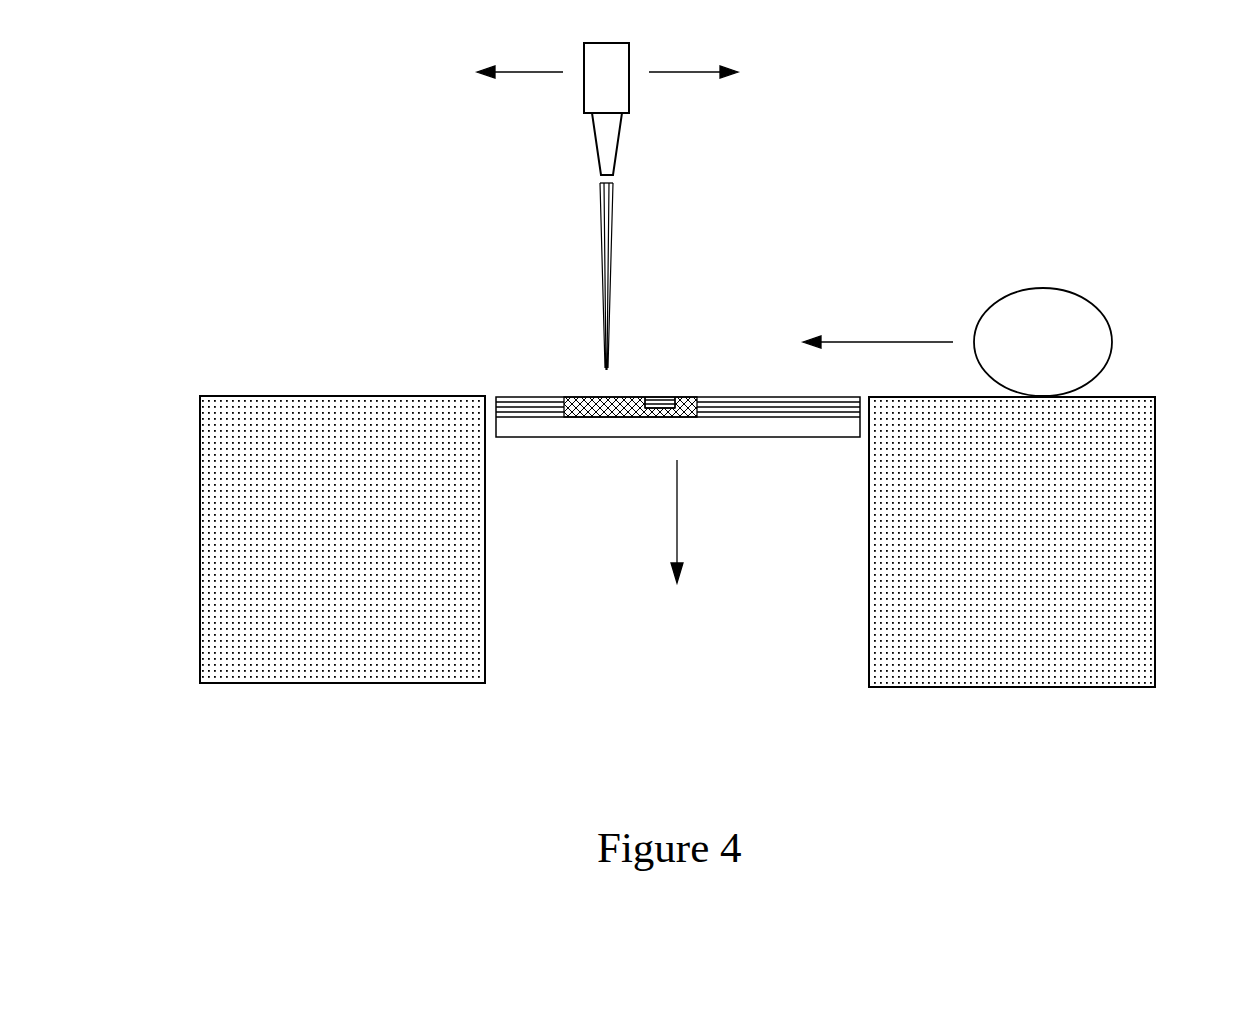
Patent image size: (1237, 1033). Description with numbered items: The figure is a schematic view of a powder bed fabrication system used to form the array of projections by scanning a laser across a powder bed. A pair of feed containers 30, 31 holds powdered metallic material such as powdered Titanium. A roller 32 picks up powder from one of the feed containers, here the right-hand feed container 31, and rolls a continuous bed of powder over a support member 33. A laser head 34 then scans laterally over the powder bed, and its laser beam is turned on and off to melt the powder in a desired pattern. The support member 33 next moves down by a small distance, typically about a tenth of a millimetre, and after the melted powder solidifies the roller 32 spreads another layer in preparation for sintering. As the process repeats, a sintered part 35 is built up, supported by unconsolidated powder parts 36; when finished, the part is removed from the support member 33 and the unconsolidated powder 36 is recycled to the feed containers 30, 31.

The feed container 30 is at (200, 536).
The feed container 31 is at (1155, 560).
The roller 32 is at (1047, 288).
The support member 33 is at (551, 427).
The laser head 34 is at (622, 100).
The sintered part 35 is at (622, 418).
The unconsolidated powder parts 36 is at (536, 403).